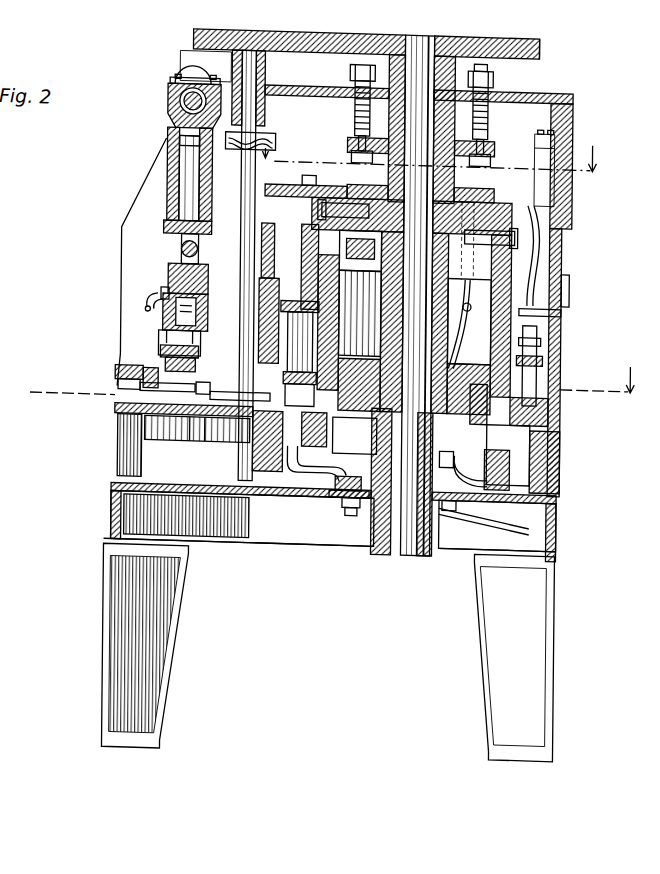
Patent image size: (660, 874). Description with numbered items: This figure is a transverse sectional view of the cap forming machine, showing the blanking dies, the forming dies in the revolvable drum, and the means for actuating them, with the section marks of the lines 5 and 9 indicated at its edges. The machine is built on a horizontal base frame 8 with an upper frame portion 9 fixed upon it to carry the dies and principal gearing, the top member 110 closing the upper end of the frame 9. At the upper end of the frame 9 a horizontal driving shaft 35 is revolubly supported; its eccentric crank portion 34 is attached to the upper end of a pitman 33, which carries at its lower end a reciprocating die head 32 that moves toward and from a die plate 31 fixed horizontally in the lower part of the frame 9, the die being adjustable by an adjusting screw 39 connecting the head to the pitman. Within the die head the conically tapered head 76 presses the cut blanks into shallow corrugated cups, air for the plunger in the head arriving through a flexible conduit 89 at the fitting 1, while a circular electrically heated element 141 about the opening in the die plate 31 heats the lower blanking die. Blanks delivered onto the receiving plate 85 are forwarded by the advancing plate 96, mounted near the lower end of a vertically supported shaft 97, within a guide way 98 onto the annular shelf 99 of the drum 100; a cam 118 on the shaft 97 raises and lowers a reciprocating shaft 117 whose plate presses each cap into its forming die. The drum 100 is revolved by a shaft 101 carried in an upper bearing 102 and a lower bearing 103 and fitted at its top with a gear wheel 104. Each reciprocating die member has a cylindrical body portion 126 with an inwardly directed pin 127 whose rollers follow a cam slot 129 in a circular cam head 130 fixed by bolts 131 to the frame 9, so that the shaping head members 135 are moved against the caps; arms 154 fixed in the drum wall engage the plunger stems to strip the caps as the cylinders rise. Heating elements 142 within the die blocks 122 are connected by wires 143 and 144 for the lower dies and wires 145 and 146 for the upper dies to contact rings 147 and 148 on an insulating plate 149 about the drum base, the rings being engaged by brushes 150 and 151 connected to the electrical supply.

The top plate 110 is at (233, 33).
The shaft 101 is at (436, 34).
The gear wheel 104 is at (514, 40).
The vertically supported shaft 97 is at (254, 113).
The bolts 131 is at (348, 70).
The upper bearing 102 is at (492, 72).
The circular cam head 130 is at (360, 162).
The inwardly directed pin 127 is at (520, 218).
The cam 118 is at (274, 144).
The vertically reciprocating shaft 117 is at (266, 180).
The cylindrical body portion 126 is at (552, 246).
The cam slot 129 is at (468, 200).
The revolubly mounted drum 100 is at (562, 340).
The wire 145 is at (548, 283).
The wire 146 is at (557, 290).
The arms 154 is at (560, 318).
The annular horizontal shelf 99 is at (556, 404).
The valve box 122 is at (560, 432).
The wire 144 is at (560, 462).
The wire 143 is at (462, 450).
The lower bearing 103 is at (432, 553).
The horizontal driving shaft 35 is at (165, 86).
The eccentric crank portion 34 is at (180, 106).
The pitman 33 is at (165, 193).
The adjusting screw 39 is at (165, 222).
The flexible conduit 89 is at (152, 296).
The reciprocating die head 32 is at (164, 322).
The valve 1 is at (158, 362).
The die plate 31 is at (116, 380).
The circular electrically heated element 141 is at (140, 396).
The upper frame portion 9 is at (120, 258).
The section line 5 is at (435, 160).
The guide way 98 is at (115, 420).
The receiving plate 85 is at (150, 420).
The conically tapered head 76 is at (195, 450).
The advancing plate 96 is at (188, 433).
The shaping head member 135 is at (218, 420).
The heating elements 142 is at (255, 458).
The contact ring 147 is at (317, 496).
The insulating plate 149 is at (336, 482).
The brush 150 is at (358, 515).
The contact ring 148 is at (342, 500).
The brush 151 is at (465, 507).
The horizontal base frame 8 is at (258, 498).